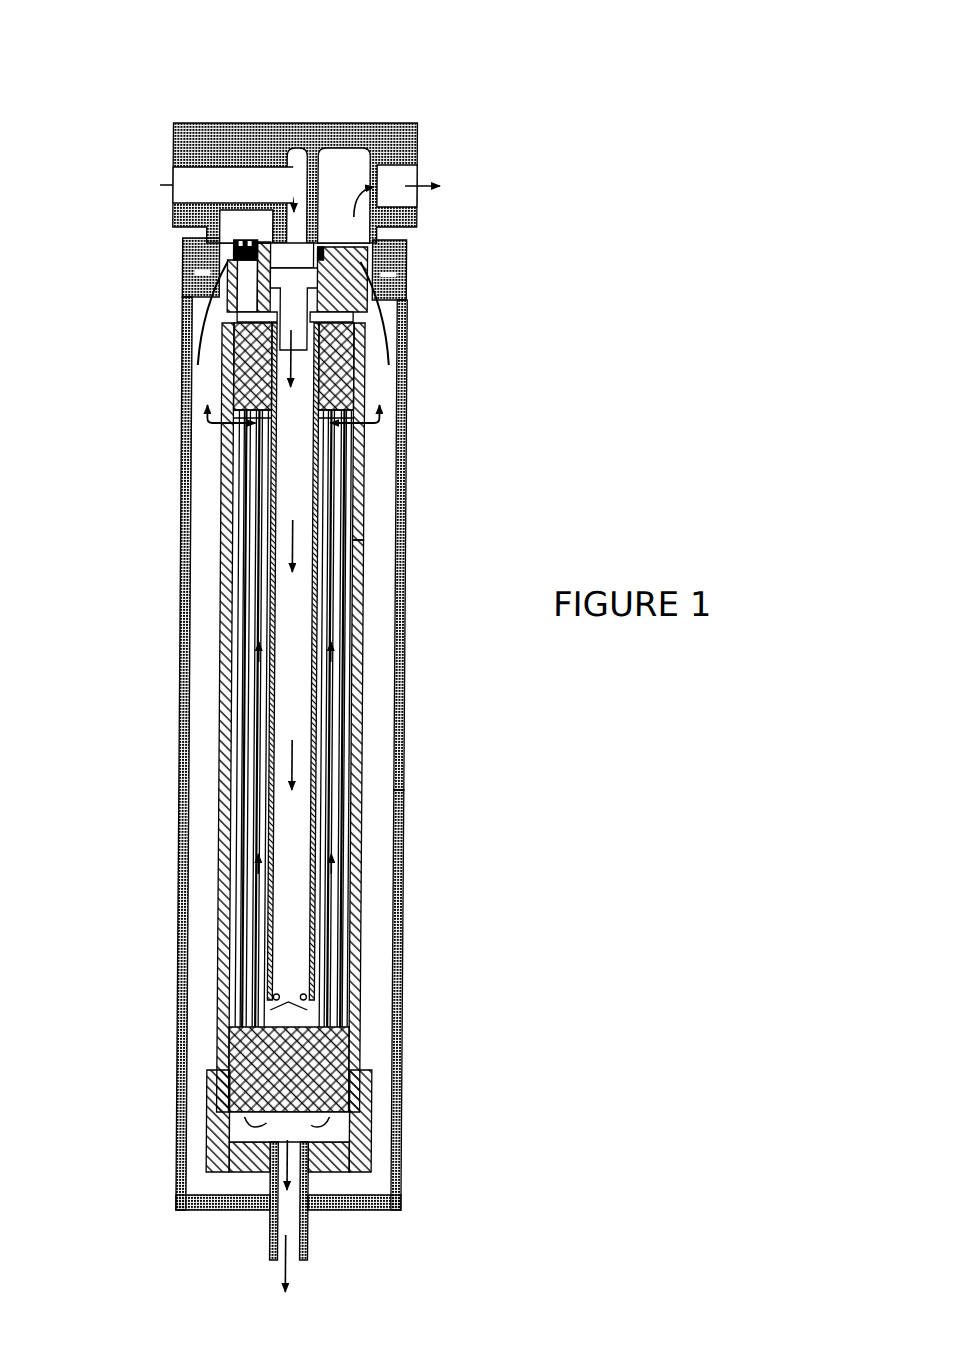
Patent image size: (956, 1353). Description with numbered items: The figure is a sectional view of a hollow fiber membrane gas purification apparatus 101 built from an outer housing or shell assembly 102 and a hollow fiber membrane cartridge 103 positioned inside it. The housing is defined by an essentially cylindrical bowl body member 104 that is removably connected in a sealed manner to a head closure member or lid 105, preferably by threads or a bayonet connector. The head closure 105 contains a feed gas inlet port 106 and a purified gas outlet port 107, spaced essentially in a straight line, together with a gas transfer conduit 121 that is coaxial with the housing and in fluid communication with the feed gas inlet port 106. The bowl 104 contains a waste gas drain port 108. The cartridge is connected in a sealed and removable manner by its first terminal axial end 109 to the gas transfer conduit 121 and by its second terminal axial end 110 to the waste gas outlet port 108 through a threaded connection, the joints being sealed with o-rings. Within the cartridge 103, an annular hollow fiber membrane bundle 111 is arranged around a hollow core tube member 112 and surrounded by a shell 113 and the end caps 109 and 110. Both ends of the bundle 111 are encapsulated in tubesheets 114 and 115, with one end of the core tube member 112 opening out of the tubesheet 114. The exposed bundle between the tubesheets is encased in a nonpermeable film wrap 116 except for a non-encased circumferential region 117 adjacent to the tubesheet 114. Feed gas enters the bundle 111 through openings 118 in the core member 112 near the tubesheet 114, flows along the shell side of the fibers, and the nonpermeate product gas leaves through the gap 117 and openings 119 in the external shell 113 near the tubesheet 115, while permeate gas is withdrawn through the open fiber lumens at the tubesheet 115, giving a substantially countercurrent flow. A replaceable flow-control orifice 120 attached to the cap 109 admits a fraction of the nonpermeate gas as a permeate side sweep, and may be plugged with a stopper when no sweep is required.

The gas purification apparatus 101 is at (291, 652).
The shell assembly 102 is at (338, 709).
The hollow fiber membrane cartridge 103 is at (380, 768).
The bowl body member 104 is at (410, 805).
The head closure member 105 is at (294, 176).
The feed gas inlet port 106 is at (187, 170).
The purified gas outlet port 107 is at (409, 170).
The waste gas drain port 108 is at (301, 1257).
The first terminal axial end 109 is at (382, 240).
The second terminal axial end 110 is at (236, 1173).
The hollow fiber membrane bundle 111 is at (337, 453).
The hollow core tube member 112 is at (297, 488).
The shell 113 is at (370, 527).
The tubesheet 114 is at (328, 342).
The tubesheet 115 is at (346, 1043).
The wrap 116 is at (355, 570).
The non-encased circumferential region 117 is at (232, 453).
The openings 118 is at (286, 1010).
The openings 119 is at (228, 428).
The flow-control orifice 120 is at (232, 265).
The gas transfer conduit 121 is at (287, 240).